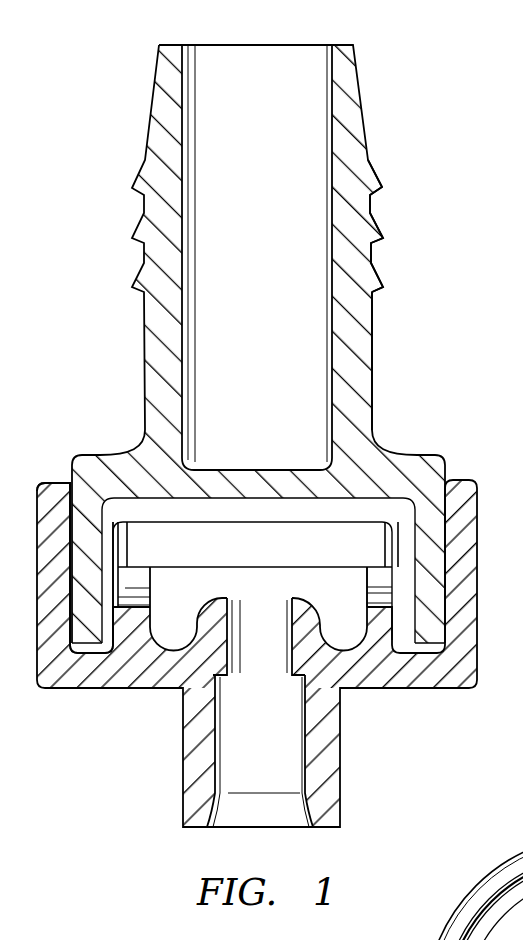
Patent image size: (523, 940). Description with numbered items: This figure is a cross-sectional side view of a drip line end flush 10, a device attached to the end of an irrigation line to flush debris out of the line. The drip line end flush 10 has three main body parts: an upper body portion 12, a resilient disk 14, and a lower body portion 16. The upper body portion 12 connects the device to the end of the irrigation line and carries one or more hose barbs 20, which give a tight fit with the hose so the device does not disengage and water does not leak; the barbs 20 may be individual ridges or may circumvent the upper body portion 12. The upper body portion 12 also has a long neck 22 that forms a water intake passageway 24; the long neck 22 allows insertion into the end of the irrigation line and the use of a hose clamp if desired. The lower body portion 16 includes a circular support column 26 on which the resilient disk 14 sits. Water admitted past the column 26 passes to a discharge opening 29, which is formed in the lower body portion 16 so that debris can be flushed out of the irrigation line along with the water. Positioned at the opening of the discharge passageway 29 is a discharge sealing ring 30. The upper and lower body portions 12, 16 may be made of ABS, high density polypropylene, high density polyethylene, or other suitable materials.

The drip line end flush 10 is at (418, 293).
The upper body portion 12 is at (148, 132).
The resilient disk 14 is at (317, 521).
The lower body portion 16 is at (442, 688).
The hose barbs 20 is at (378, 183).
The long neck 22 is at (367, 348).
The water intake passageway 24 is at (305, 56).
The circular support column 26 is at (370, 614).
The discharge opening 29 is at (233, 827).
The discharge sealing ring 30 is at (196, 632).